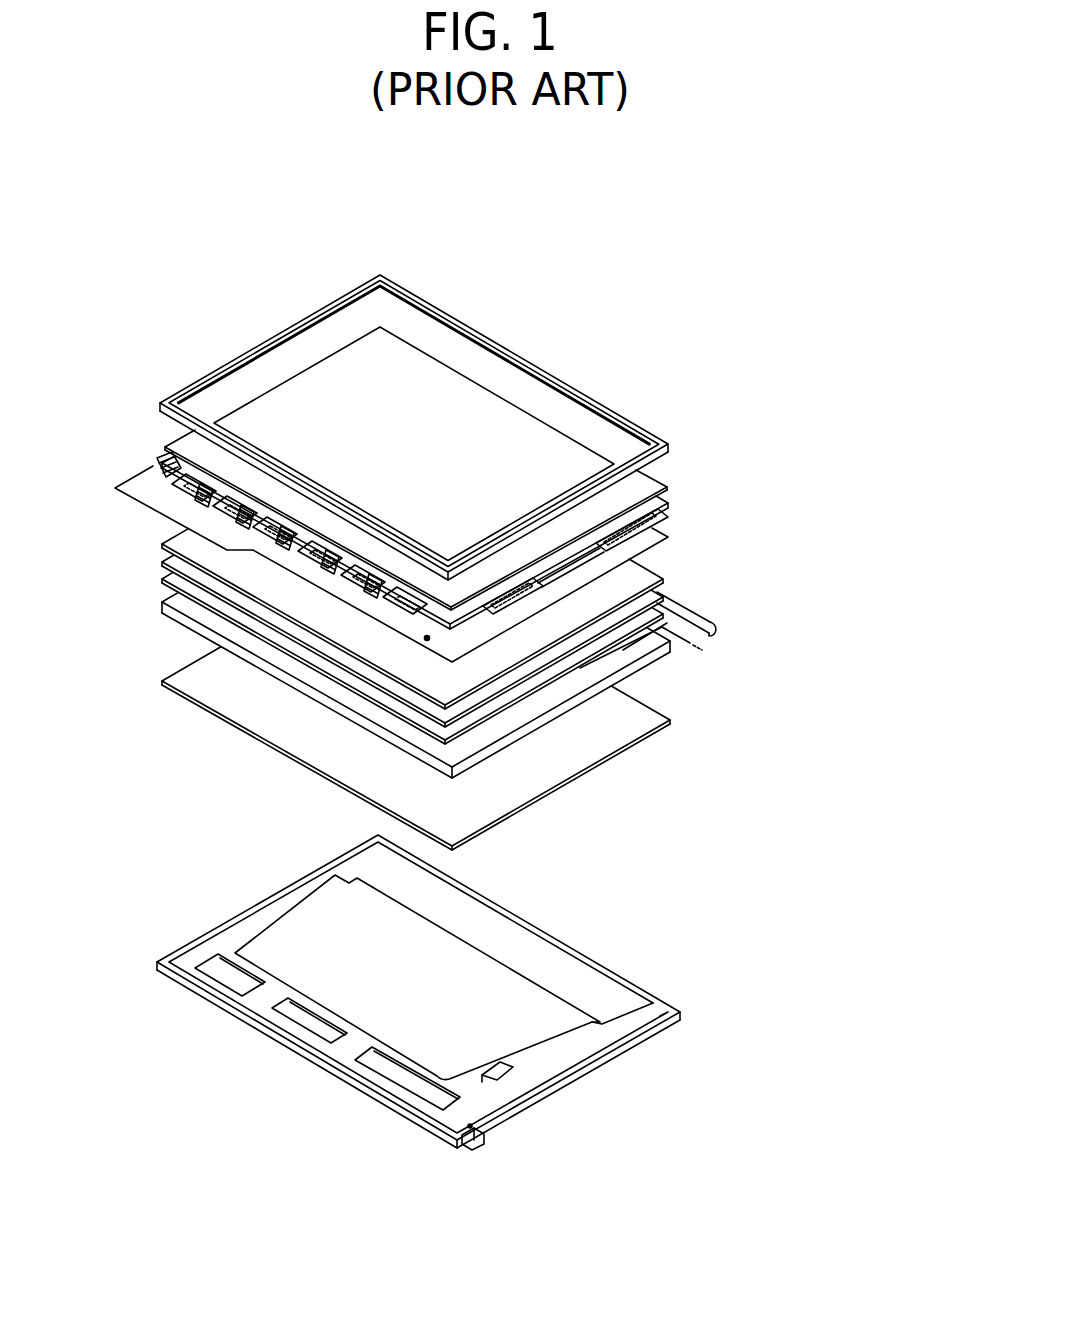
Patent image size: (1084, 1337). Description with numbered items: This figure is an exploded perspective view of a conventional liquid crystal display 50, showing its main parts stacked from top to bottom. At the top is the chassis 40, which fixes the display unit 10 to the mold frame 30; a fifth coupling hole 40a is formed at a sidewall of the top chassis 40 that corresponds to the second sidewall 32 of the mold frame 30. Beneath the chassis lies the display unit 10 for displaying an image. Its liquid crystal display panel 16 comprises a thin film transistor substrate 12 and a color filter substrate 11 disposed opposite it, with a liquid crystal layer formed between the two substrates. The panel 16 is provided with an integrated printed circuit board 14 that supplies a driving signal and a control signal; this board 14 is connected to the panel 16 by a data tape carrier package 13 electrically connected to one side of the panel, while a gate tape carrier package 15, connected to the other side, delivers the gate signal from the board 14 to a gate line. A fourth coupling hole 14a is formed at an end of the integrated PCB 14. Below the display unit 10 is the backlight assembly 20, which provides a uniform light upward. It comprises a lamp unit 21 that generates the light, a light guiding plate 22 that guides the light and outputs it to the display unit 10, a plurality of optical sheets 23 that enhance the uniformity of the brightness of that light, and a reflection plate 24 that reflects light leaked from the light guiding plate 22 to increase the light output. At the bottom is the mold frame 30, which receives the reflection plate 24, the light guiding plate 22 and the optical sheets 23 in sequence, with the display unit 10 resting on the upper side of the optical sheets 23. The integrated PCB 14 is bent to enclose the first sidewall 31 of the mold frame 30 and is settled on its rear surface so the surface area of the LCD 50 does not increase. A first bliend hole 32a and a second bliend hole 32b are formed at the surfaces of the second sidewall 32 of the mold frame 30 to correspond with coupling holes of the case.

The liquid crystal display 50 is at (637, 283).
The chassis 40 is at (597, 400).
The fifth coupling hole 40a is at (470, 560).
The display unit 10 is at (808, 487).
The liquid crystal display panel 16 is at (753, 455).
The color filter substrate 11 is at (642, 487).
The thin film transistor substrate 12 is at (664, 505).
The gate tape carrier package 15 is at (647, 525).
The data tape carrier package 13 is at (170, 458).
The integrated printed circuit board 14 is at (147, 495).
The fourth coupling hole 14a is at (427, 639).
The backlight assembly 20 is at (877, 578).
The lamp unit 21 is at (710, 608).
The light guiding plate 22 is at (557, 713).
The optical sheets 23 is at (153, 535).
The reflection plate 24 is at (530, 782).
The mold frame 30 is at (718, 988).
The first sidewall 31 is at (385, 1103).
The second sidewall 32 is at (573, 1078).
The first bliend hole 32a is at (482, 1137).
The second bliend hole 32b is at (467, 1133).